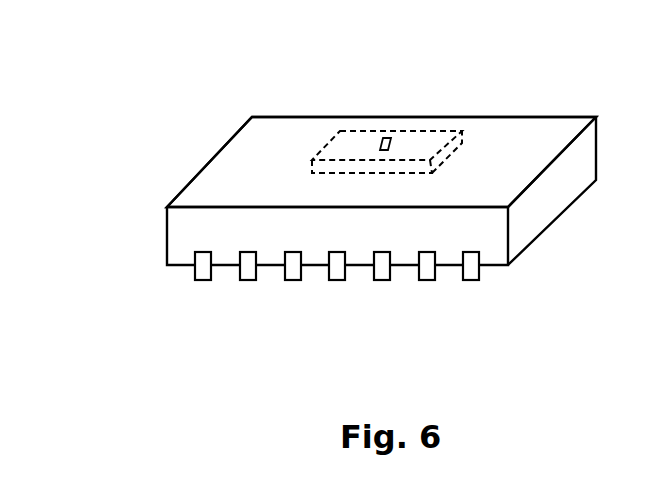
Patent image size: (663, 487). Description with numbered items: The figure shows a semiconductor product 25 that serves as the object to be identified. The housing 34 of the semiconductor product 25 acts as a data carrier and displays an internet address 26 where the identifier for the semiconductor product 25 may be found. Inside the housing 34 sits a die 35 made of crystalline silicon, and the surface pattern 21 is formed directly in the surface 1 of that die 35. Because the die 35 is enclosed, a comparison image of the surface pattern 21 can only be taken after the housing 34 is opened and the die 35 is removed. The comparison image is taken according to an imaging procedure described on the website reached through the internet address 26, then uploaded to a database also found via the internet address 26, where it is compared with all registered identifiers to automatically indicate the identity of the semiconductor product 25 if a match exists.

The surface 1 is at (502, 147).
The surface pattern 21 is at (390, 137).
The semiconductor product 25 is at (577, 116).
The internet address 26 is at (252, 182).
The housing 34 is at (163, 208).
The die 35 is at (422, 137).